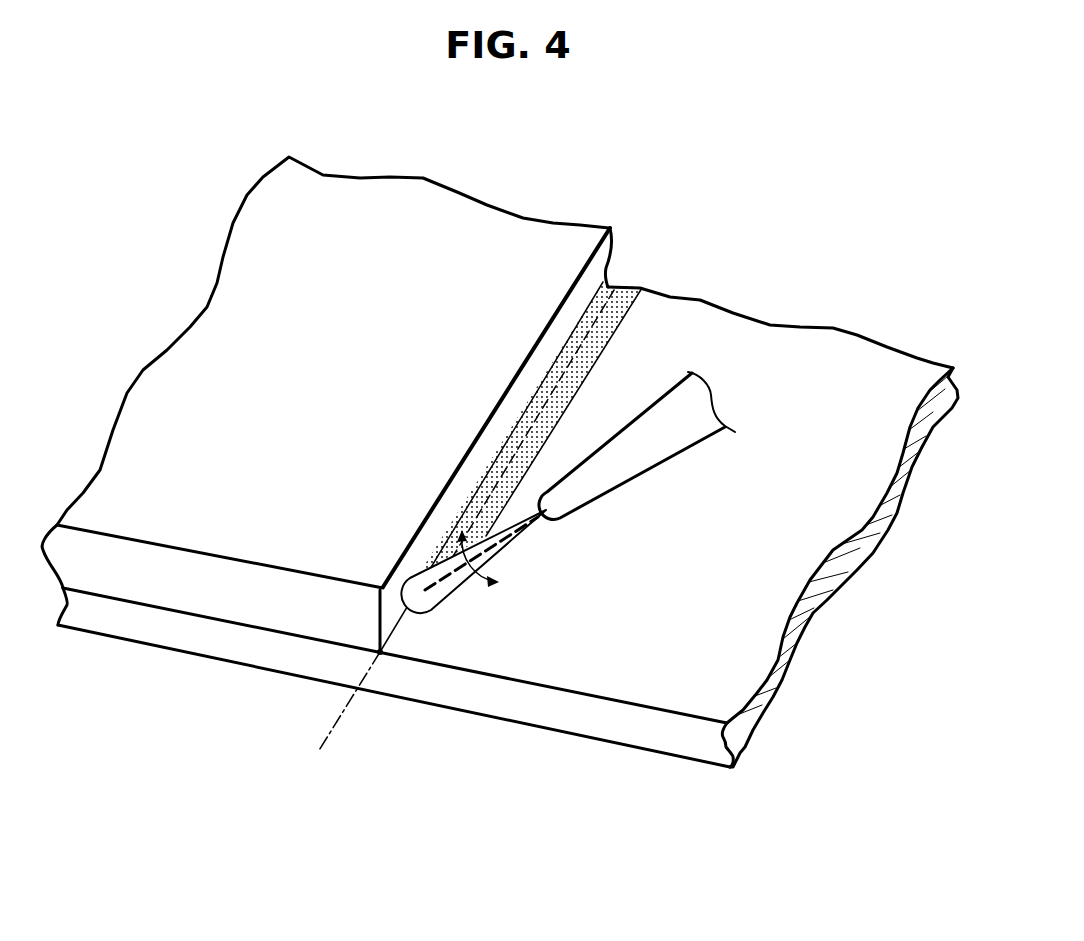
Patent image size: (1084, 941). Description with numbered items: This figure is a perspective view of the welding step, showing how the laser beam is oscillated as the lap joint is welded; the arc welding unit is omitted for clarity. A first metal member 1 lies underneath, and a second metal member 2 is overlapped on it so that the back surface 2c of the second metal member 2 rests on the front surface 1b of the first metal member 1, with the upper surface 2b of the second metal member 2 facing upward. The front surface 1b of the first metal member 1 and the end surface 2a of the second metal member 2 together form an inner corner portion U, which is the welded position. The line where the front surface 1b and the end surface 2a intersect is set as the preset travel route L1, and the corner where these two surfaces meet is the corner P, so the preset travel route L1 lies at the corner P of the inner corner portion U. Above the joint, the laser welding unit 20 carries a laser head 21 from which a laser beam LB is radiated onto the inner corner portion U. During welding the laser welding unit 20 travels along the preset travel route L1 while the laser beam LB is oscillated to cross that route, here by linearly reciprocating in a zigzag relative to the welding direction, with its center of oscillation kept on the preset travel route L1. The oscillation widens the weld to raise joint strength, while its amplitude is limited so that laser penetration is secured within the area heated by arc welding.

The first metal member 1 is at (508, 551).
The front surface 1b is at (680, 655).
The second metal member 2 is at (384, 441).
The end surface 2a is at (503, 417).
The upper surface of second plate 2b is at (313, 473).
The back surface 2c is at (158, 607).
The inner corner portion U is at (595, 332).
The laser beam LB is at (515, 558).
The preset travel route L1 is at (335, 725).
The corner P is at (380, 652).
The laser welding unit 20 is at (662, 453).
The laser head 21 is at (647, 460).